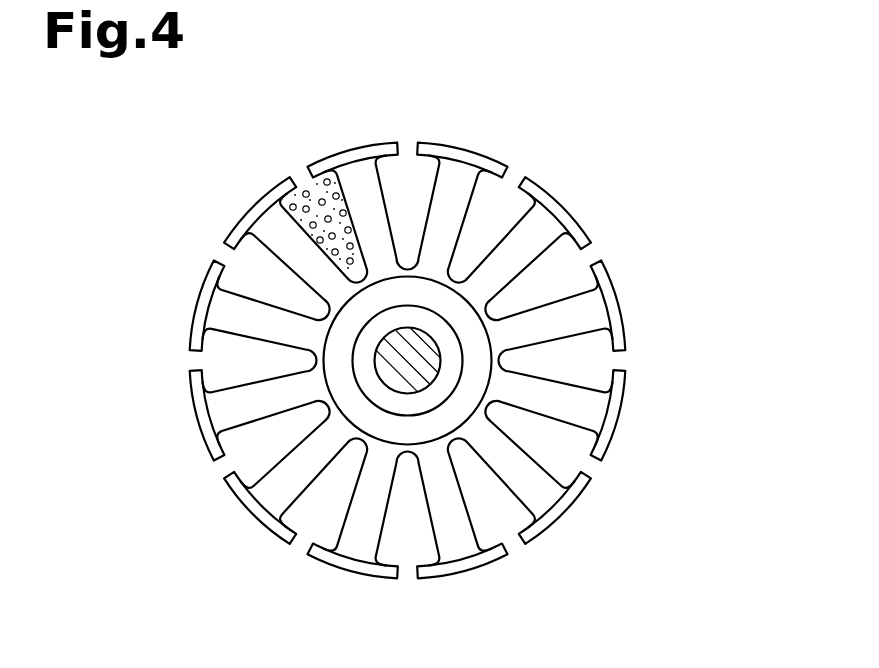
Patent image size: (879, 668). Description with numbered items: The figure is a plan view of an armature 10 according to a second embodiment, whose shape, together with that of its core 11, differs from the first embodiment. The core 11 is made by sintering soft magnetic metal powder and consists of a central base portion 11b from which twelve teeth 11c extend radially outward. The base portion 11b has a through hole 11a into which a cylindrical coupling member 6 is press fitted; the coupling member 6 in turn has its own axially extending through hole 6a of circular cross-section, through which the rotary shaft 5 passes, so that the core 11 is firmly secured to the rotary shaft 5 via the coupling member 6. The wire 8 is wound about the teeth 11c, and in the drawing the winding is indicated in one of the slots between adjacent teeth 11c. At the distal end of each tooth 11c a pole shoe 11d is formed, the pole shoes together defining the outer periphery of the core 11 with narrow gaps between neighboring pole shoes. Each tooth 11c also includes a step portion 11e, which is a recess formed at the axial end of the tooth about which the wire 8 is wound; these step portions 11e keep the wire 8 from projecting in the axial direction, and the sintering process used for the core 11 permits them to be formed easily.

The rotary shaft 5 is at (420, 99).
The coupling member 6 is at (372, 337).
The through hole 6a is at (383, 361).
The wire 8 is at (283, 190).
The armature 10 is at (421, 375).
The core 11 is at (623, 297).
The through hole 11a is at (389, 401).
The base portion 11b is at (503, 360).
The teeth 11c is at (214, 314).
The pole shoe 11d is at (280, 542).
The step portion 11e is at (505, 442).